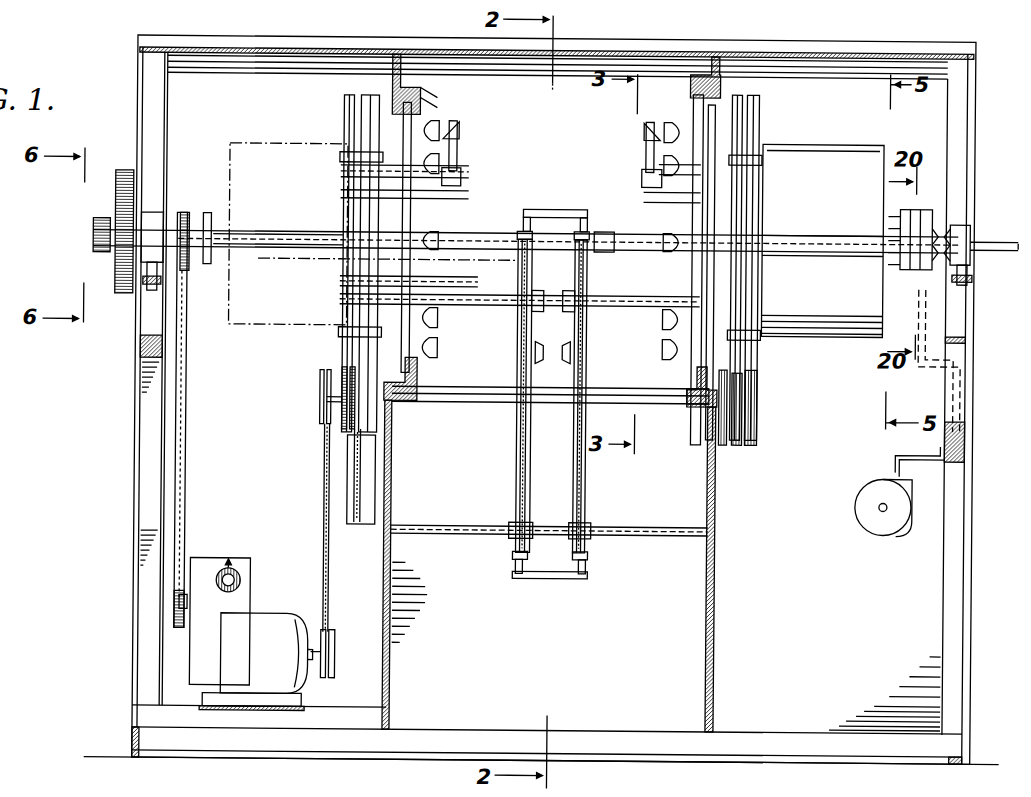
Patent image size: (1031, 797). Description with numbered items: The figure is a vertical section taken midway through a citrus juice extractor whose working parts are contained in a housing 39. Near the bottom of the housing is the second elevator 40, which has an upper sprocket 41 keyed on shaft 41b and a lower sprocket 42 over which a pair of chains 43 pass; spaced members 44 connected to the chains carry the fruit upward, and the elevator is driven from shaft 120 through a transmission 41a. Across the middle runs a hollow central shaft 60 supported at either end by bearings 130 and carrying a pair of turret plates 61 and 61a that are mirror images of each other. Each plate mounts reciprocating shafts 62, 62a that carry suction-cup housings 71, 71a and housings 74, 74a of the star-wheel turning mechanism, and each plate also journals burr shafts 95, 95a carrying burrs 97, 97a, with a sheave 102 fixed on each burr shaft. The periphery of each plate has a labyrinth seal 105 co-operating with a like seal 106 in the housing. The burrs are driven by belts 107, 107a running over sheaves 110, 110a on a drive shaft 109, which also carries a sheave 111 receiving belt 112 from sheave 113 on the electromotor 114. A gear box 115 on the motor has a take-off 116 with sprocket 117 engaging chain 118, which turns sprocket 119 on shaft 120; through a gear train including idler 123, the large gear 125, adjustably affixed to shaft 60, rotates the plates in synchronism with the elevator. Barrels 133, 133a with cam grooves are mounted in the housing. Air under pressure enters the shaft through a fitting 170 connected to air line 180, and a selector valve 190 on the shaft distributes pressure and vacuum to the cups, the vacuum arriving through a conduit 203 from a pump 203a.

The housing 39 is at (638, 48).
The second elevator 40 is at (591, 484).
The upper sprocket 41 is at (600, 247).
The transmission 41a is at (213, 232).
The shaft 41b is at (236, 260).
The lower sprocket 42 is at (590, 538).
The chains 43 is at (577, 428).
The spaced members 44 is at (556, 207).
The central shaft 60 is at (170, 228).
The turret plate 61 is at (694, 213).
The turret plate 61a is at (412, 211).
The shaft 62 is at (650, 165).
The shaft 62a is at (458, 170).
The housing 71 is at (647, 145).
The housing 71a is at (458, 141).
The housing 74 is at (643, 173).
The housing 74a is at (462, 176).
The shaft 95 is at (713, 130).
The shaft 95a is at (338, 337).
The burr 97 is at (676, 118).
The burr 97a is at (432, 120).
The sheave 102 is at (760, 133).
The labyrinth seal 105 is at (422, 95).
The labyrinth seal 106 is at (421, 79).
The belt 107 is at (750, 360).
The belt 107a is at (347, 376).
The drive shaft 109 is at (345, 396).
The sheave 110 is at (760, 407).
The sheave 110a is at (395, 428).
The sheave 111 is at (345, 413).
The belt 112 is at (328, 506).
The sheave 113 is at (340, 643).
The electromotor 114 is at (308, 684).
The gear box 115 is at (255, 573).
The take-off 116 is at (192, 603).
The sprocket 117 is at (182, 605).
The chain 118 is at (189, 473).
The sprocket 119 is at (188, 212).
The shaft 120 is at (268, 230).
The idler 123 is at (95, 233).
The large gear 125 is at (117, 194).
The bearing 130 is at (155, 212).
The barrel 133 is at (840, 148).
The barrel 133a is at (285, 140).
The fitting 170 is at (980, 236).
The air line 180 is at (1002, 248).
The selector valve 190 is at (934, 210).
The conduit 203 is at (921, 289).
The pump 203a is at (862, 512).